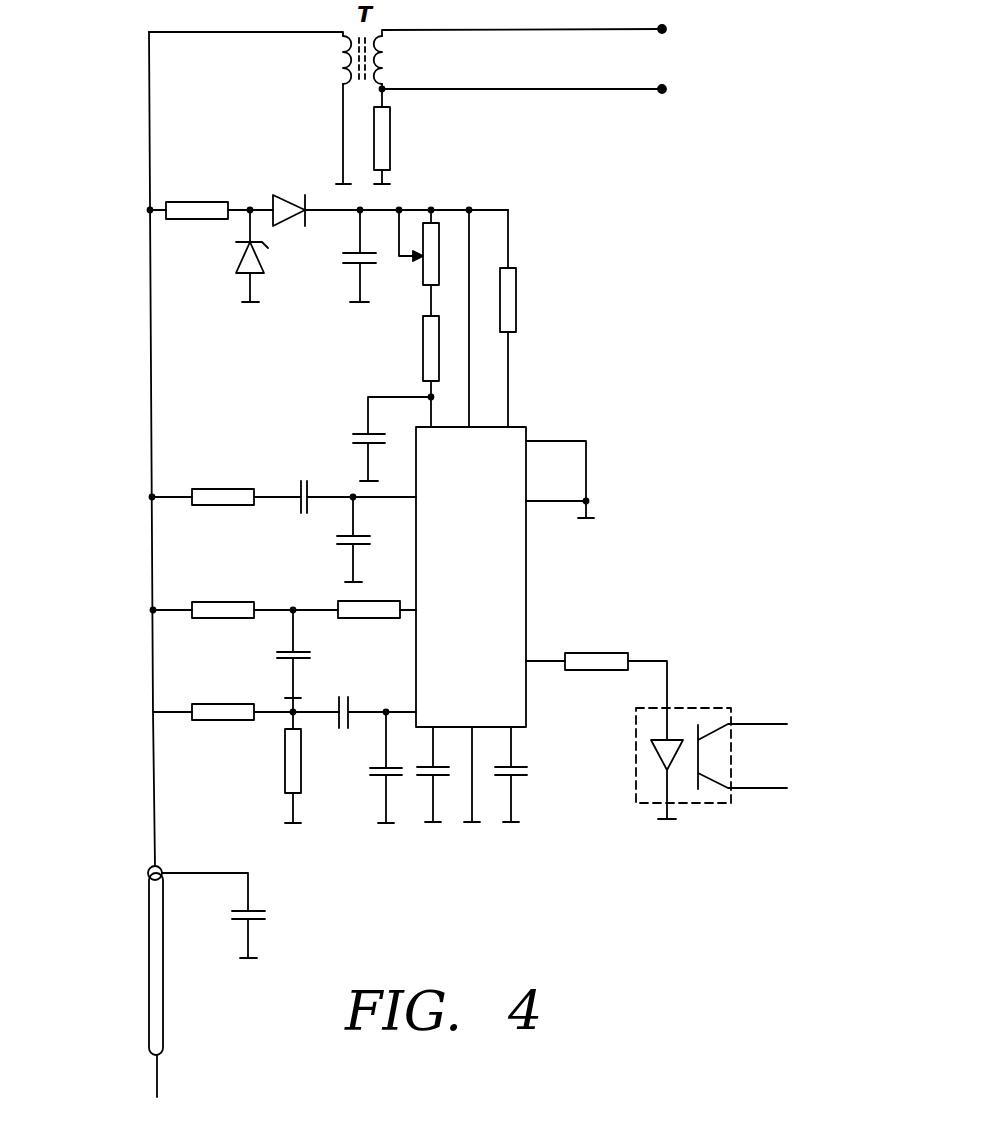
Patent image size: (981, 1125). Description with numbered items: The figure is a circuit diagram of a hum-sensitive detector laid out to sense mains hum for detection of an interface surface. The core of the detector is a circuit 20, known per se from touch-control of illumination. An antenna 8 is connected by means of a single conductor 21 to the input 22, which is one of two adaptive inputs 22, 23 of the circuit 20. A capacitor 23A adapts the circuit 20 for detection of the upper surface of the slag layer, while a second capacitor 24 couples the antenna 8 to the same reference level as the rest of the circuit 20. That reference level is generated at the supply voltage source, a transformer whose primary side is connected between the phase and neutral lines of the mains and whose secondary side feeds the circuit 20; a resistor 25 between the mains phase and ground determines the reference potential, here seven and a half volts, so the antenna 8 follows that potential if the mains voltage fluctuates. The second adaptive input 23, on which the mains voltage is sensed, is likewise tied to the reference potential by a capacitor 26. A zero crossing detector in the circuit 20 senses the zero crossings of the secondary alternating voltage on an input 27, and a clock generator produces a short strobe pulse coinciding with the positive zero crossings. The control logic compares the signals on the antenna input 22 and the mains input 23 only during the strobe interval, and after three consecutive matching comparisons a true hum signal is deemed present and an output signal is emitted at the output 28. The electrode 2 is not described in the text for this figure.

The electrode probe 2 is at (163, 1015).
The antenna 8 is at (157, 1073).
The circuit 20 is at (502, 630).
The single conductor 21 is at (161, 712).
The input 22 is at (416, 712).
The second adaptive input 23 is at (416, 497).
The capacitor 23A is at (348, 705).
The second capacitor 24 is at (383, 778).
The resistor 25 is at (381, 128).
The capacitor 26 is at (355, 541).
The input 27 is at (416, 610).
The output 28 is at (526, 662).